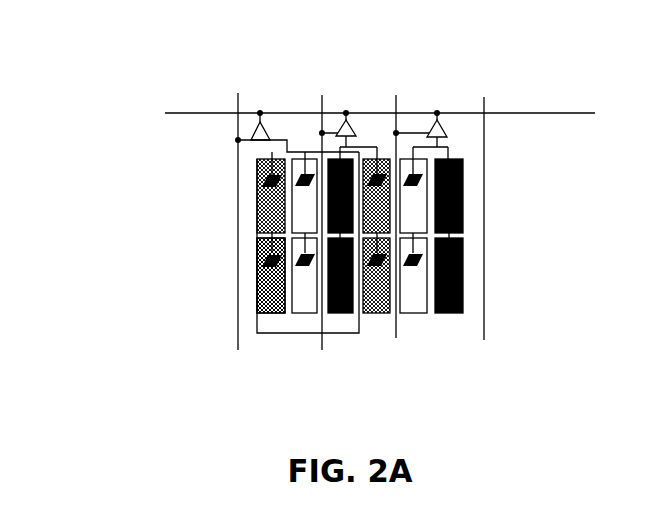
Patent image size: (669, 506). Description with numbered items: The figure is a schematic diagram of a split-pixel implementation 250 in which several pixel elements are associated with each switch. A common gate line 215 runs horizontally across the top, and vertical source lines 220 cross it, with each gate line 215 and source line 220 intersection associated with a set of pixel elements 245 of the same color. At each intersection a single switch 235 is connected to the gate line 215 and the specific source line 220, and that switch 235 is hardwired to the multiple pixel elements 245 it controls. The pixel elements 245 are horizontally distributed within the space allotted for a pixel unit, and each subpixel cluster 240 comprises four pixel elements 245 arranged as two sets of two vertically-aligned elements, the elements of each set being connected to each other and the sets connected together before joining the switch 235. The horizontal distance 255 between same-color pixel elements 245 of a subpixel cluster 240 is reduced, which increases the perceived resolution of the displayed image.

The split-pixel implementation 250 is at (58, 50).
The gate line 215 is at (379, 99).
The source line 220 is at (370, 209).
The switch 235 is at (257, 141).
The subpixel cluster 240 is at (484, 323).
The pixel element 245 is at (262, 258).
The horizontal distance 255 is at (307, 333).